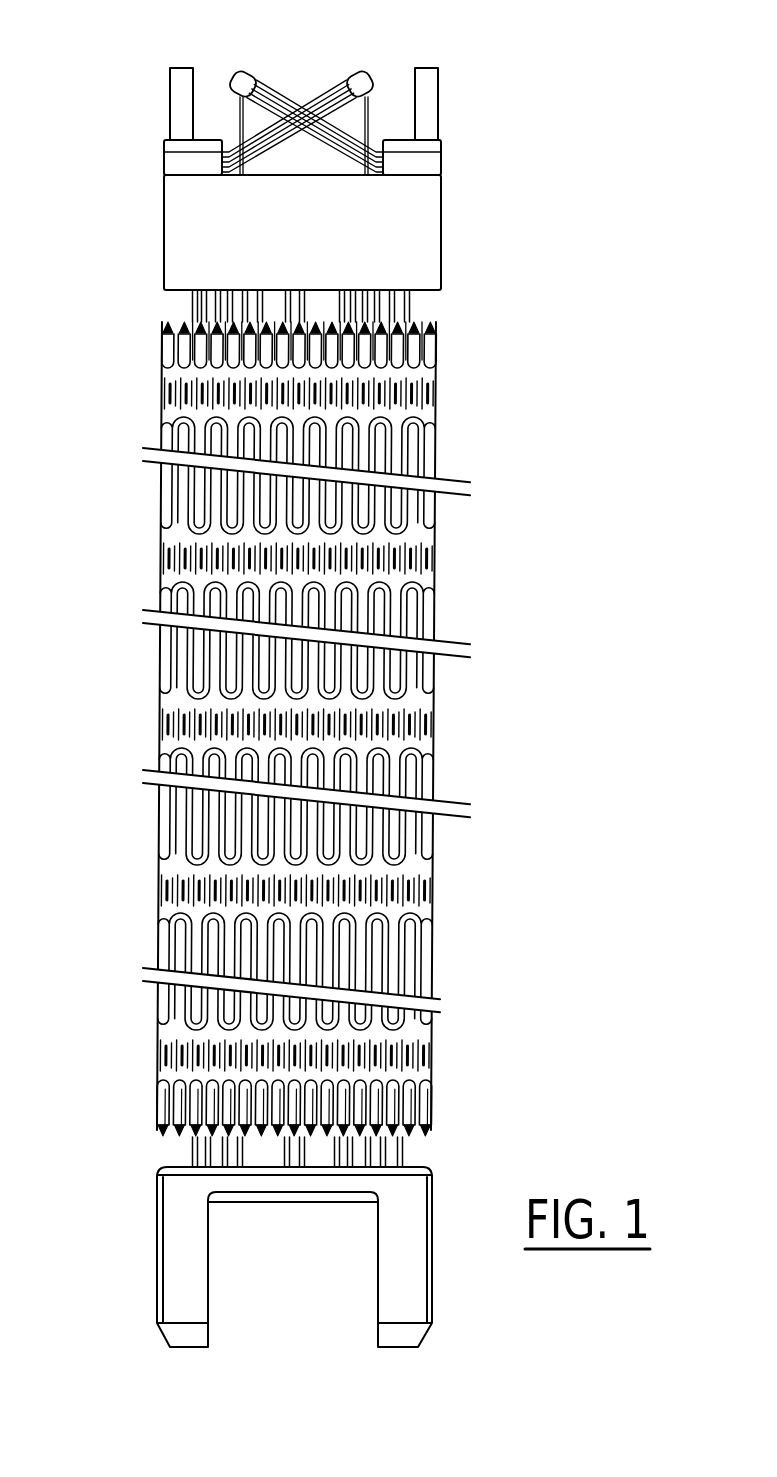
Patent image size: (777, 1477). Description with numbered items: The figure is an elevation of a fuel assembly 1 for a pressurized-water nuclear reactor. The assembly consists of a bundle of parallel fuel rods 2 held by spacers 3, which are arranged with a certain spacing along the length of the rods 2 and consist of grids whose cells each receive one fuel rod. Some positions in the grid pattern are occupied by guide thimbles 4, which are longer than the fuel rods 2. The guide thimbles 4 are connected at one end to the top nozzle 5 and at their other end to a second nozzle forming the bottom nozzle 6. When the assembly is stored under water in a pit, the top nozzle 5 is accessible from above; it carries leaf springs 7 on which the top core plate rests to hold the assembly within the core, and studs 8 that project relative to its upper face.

The fuel assembly 1 is at (150, 638).
The fuel rods 2 is at (218, 358).
The spacers 3 is at (415, 395).
The guide thimbles 4 is at (398, 305).
The top nozzle 5 is at (197, 225).
The bottom nozzle 6 is at (188, 1227).
The leaf springs 7 is at (232, 78).
The studs 8 is at (185, 163).